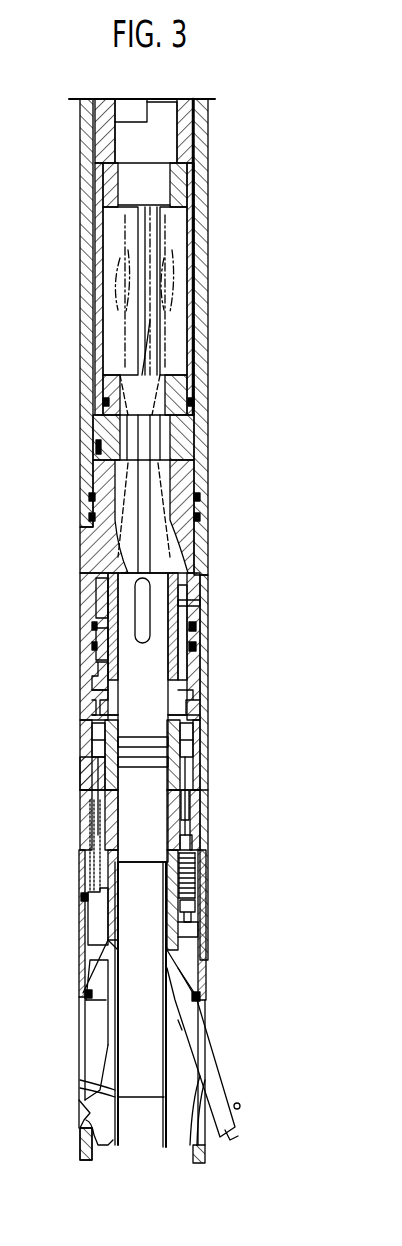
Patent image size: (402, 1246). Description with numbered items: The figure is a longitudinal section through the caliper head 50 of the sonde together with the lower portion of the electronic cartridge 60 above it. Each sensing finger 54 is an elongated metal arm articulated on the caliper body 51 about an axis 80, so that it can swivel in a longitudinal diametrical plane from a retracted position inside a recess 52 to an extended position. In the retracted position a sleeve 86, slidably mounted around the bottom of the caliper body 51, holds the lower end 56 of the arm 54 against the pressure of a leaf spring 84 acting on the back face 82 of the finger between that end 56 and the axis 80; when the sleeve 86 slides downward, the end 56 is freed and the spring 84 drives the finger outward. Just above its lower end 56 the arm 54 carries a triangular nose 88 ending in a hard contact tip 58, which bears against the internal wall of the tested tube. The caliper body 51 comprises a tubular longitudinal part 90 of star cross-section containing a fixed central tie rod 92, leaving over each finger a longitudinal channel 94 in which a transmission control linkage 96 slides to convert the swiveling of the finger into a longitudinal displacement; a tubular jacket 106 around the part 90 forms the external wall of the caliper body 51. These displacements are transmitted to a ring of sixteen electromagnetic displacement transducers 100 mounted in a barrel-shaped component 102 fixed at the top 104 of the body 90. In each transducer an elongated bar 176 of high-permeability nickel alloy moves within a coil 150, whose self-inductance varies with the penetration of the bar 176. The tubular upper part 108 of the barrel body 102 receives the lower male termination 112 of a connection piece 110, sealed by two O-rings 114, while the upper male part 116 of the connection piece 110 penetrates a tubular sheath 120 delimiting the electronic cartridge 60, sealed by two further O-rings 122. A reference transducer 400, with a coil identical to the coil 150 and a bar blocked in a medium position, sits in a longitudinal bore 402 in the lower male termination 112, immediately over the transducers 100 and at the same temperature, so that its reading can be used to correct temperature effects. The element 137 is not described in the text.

The caliper head 50 is at (230, 983).
The caliper body 51 is at (155, 1006).
The recess 52 is at (68, 1050).
The finger 54 is at (153, 1038).
The lower end of arm 56 is at (154, 1117).
The contact tip 58 is at (255, 1092).
The electronic cartridge 60 is at (172, 529).
The axis 80 is at (154, 964).
The back face 82 is at (224, 1013).
The leaf spring 84 is at (74, 1089).
The sleeve 86 is at (62, 1144).
The triangular nose 88 is at (234, 1095).
The tubular longitudinal part 90 is at (223, 921).
The central tie rod 92 is at (101, 726).
The longitudinal channel 94 is at (224, 878).
The transmission control linkage 96 is at (71, 872).
The electromagnetic displacement transducer 100 is at (65, 726).
The barrel-shaped component 102 is at (66, 759).
The top of body 104 is at (221, 804).
The tubular jacket 106 is at (73, 803).
The tubular upper part 108 is at (228, 619).
The connection piece 110 is at (181, 625).
The lower male termination 112 is at (65, 604).
The O-ring 114 is at (229, 630).
The upper male part 116 is at (61, 434).
The tubular sheath 120 is at (186, 417).
The O-ring 122 is at (111, 489).
The tapered guide 137 is at (105, 516).
The coil 150 is at (229, 725).
The elongated bar 176 is at (228, 796).
The reference transducer 400 is at (66, 643).
The longitudinal bore 402 is at (67, 673).